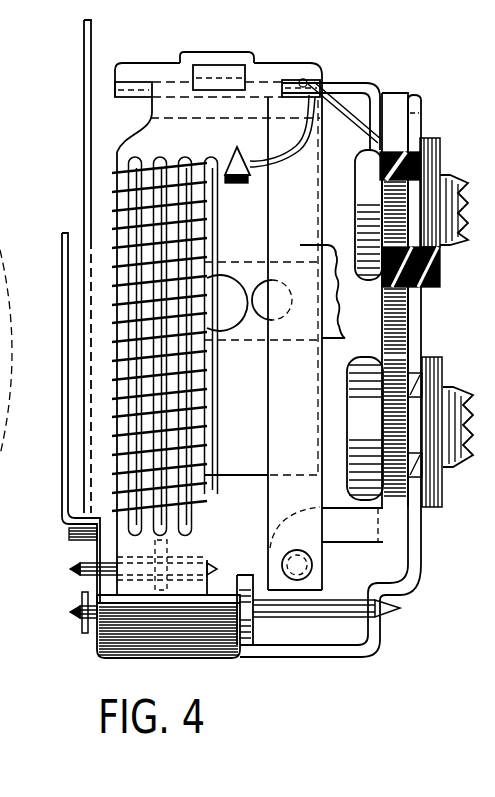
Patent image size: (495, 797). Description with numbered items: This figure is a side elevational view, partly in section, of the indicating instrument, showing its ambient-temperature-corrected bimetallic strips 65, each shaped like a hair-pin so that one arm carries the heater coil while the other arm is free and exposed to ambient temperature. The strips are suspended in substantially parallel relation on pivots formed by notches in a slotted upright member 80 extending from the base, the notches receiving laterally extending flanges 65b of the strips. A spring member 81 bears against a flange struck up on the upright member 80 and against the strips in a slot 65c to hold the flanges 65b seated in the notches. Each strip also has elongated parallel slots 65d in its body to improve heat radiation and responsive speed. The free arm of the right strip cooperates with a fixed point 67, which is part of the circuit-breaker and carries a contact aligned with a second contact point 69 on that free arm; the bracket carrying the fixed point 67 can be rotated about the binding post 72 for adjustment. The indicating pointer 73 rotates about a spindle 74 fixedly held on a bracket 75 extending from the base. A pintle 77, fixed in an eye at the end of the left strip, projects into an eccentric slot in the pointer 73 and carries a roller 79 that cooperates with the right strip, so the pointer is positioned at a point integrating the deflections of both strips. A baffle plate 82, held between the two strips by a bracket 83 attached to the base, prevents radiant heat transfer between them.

The bimetallic strips 65 is at (207, 380).
The laterally extending flanges 65b is at (130, 78).
The slot 65c is at (197, 68).
The elongated parallel slots 65d is at (115, 373).
The fixed point 67 is at (337, 520).
The contact point 69 is at (287, 560).
The binding post 72 is at (355, 412).
The indicating pointer 73 is at (62, 505).
The spindle 74 is at (70, 612).
The bracket 75 is at (370, 649).
The pintle 77 is at (72, 570).
The roller 79 is at (160, 555).
The slotted upright member 80 is at (352, 82).
The spring member 81 is at (218, 64).
The baffle plate 82 is at (112, 122).
The bracket 83 is at (328, 247).